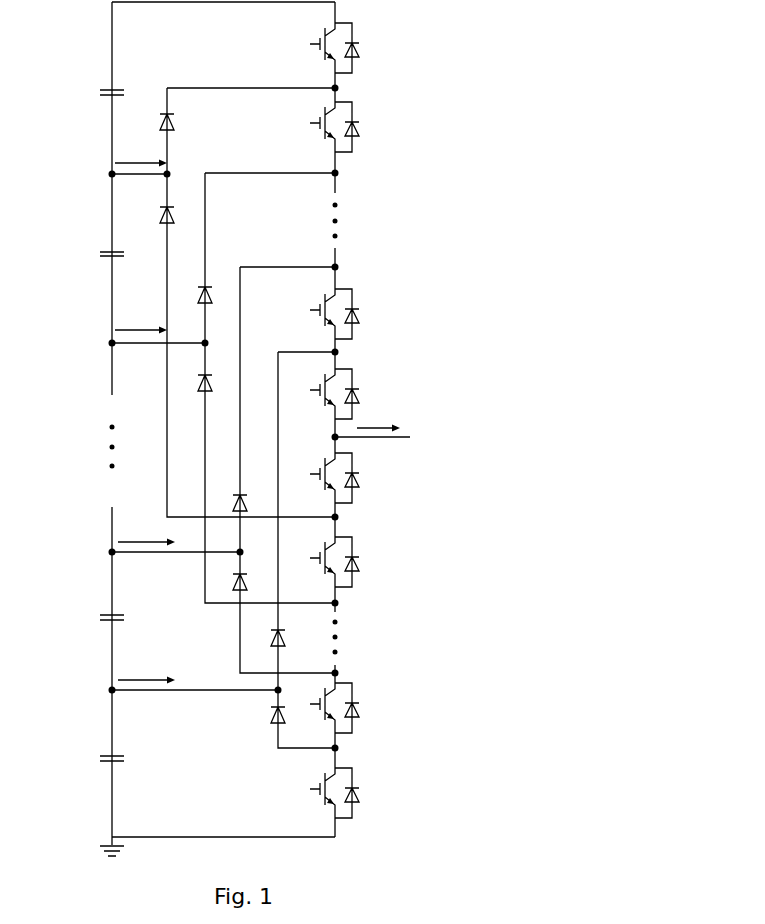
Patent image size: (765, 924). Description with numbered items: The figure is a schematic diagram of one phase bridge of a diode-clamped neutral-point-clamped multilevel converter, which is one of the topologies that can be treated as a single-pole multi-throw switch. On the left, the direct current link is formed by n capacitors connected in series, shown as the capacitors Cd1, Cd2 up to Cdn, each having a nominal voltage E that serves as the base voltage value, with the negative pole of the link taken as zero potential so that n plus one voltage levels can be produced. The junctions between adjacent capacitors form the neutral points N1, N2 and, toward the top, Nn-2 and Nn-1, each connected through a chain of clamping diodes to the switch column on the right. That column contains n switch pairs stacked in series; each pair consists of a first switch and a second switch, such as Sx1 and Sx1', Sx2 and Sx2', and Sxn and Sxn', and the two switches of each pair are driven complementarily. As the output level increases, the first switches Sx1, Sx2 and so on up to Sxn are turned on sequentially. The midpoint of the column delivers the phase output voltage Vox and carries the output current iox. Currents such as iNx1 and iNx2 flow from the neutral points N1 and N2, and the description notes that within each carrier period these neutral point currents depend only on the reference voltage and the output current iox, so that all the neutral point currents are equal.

The first switch of the nth switch pair Sxn is at (355, 48).
The first switch of the second switch pair Sx2 is at (354, 314).
The first switch of the first switch pair Sx1 is at (354, 394).
The second switch of the nth switch pair Sxn' is at (355, 478).
The second switch of the second switch pair Sx2' is at (358, 708).
The second switch of the first switch pair Sx1' is at (358, 793).
The nth DC-link capacitor Cdn is at (89, 100).
The second DC-link capacitor Cd2 is at (89, 622).
The first DC-link capacitor Cd1 is at (89, 763).
The nominal capacitor voltage E is at (118, 421).
The neutral point N(n-1) Nn-1 is at (118, 175).
The neutral point N(n-2) Nn-2 is at (137, 344).
The neutral point N2 is at (158, 553).
The neutral point N1 is at (180, 691).
The neutral point current of N2 iNx2 is at (146, 532).
The neutral point current of N1 iNx1 is at (146, 670).
The output current of x phase iox is at (378, 418).
The output voltage of x phase Vox is at (389, 438).